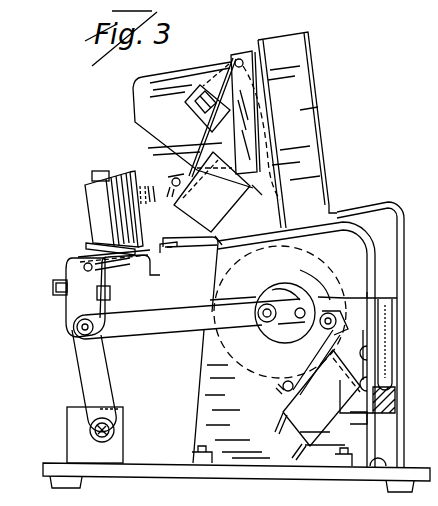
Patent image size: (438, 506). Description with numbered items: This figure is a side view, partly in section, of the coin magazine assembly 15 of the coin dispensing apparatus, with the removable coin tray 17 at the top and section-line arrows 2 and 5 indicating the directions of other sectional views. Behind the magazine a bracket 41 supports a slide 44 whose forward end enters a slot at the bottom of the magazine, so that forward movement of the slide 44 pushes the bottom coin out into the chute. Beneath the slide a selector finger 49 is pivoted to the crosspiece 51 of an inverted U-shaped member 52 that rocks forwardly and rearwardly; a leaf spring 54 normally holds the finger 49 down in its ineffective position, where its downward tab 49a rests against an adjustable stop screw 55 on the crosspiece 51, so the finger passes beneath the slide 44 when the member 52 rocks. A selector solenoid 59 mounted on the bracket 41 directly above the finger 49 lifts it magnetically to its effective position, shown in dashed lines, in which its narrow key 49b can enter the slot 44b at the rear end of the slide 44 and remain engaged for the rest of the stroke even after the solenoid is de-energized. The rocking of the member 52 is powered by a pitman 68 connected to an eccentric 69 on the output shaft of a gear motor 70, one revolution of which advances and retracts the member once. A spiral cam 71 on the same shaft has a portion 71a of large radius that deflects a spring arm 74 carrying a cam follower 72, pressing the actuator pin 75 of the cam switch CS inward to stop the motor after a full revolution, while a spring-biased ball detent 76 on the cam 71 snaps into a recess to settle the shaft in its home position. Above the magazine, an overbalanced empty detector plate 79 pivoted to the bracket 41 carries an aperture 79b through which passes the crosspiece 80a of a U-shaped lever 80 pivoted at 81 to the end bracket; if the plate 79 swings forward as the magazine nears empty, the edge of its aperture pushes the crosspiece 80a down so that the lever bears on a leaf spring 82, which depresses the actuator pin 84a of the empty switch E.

The section line 2— 2 is at (362, 18).
The section line 5 is at (52, 98).
The coin magazine assembly 15 is at (362, 170).
The removable coin tray 17 is at (281, 30).
The bracket 41 is at (168, 176).
The slide 44 is at (200, 236).
The slot 44b is at (170, 256).
The selector finger 49 is at (130, 262).
The tab 49a is at (106, 285).
The key portion 49b is at (163, 262).
The crosspiece 51 is at (70, 265).
The inverted U-shaped member 52 is at (72, 375).
The leaf spring 54 is at (58, 433).
The adjustable stop screw 55 is at (72, 314).
The selector solenoid 59 is at (100, 204).
The pitman 68 is at (148, 330).
The eccentric 69 is at (265, 307).
The gear motor 70 is at (308, 264).
The spiral cam 71 is at (325, 285).
The cam portion of relatively great radius 71a is at (352, 299).
The cam follower 72 is at (278, 312).
The spring arm 74 is at (335, 353).
The actuator pin 75 is at (317, 405).
The spring biased ball detent 76 is at (336, 311).
The empty detector plate 79 is at (153, 92).
The aperture 79b is at (232, 60).
The U-shaped lever 80 is at (250, 92).
The crosspiece 80a is at (192, 103).
The pivot 81 is at (240, 58).
The leaf spring 82 is at (199, 126).
The actuator pin 84a is at (152, 148).
The cam switch CS is at (283, 411).
The empty switch E is at (218, 198).